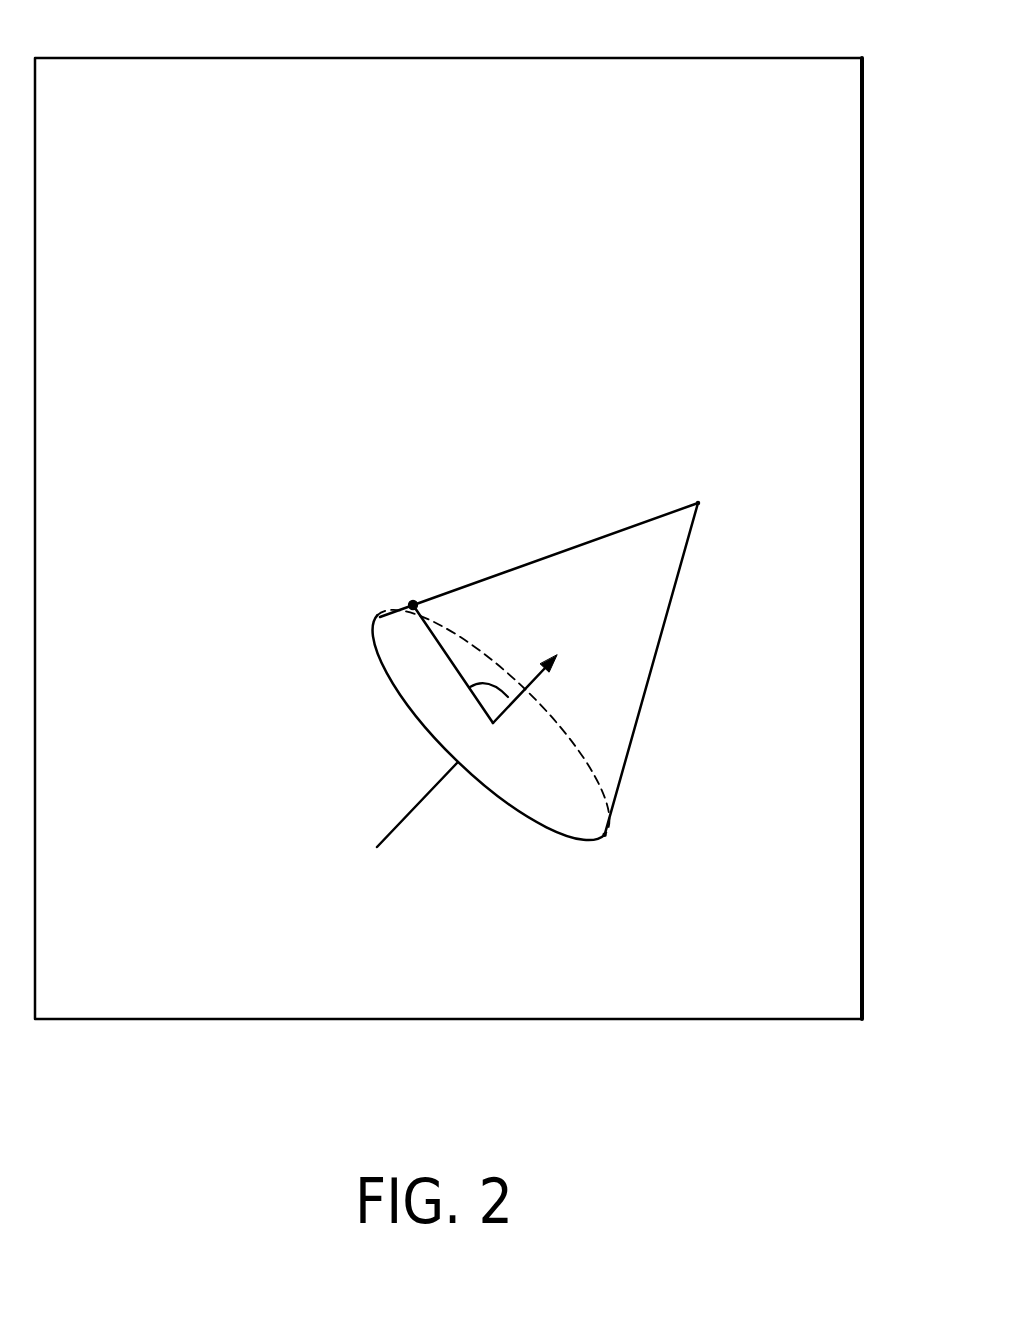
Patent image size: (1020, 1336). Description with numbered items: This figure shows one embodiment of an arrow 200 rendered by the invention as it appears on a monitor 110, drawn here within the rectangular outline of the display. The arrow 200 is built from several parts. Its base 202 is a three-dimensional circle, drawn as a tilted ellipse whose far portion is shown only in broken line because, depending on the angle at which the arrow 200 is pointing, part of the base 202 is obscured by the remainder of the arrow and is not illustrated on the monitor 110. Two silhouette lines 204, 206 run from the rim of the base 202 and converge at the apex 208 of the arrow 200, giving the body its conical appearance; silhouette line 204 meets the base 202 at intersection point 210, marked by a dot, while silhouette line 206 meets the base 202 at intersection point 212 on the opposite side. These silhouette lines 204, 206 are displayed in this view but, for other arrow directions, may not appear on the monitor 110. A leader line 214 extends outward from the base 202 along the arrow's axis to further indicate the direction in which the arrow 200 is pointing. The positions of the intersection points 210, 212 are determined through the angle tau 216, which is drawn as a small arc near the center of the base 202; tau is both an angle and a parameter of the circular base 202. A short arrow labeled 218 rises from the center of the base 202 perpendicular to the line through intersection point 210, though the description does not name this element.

The monitor 110 is at (533, 59).
The arrow 200 is at (499, 262).
The base 202 is at (395, 690).
The silhouette line 204 is at (530, 560).
The silhouette line 206 is at (681, 565).
The apex 208 is at (698, 503).
The intersection point 210 is at (413, 604).
The intersection point 212 is at (601, 837).
The leader line 214 is at (397, 828).
The angle tau 216 is at (484, 681).
The normal vector at base center 218 is at (483, 658).